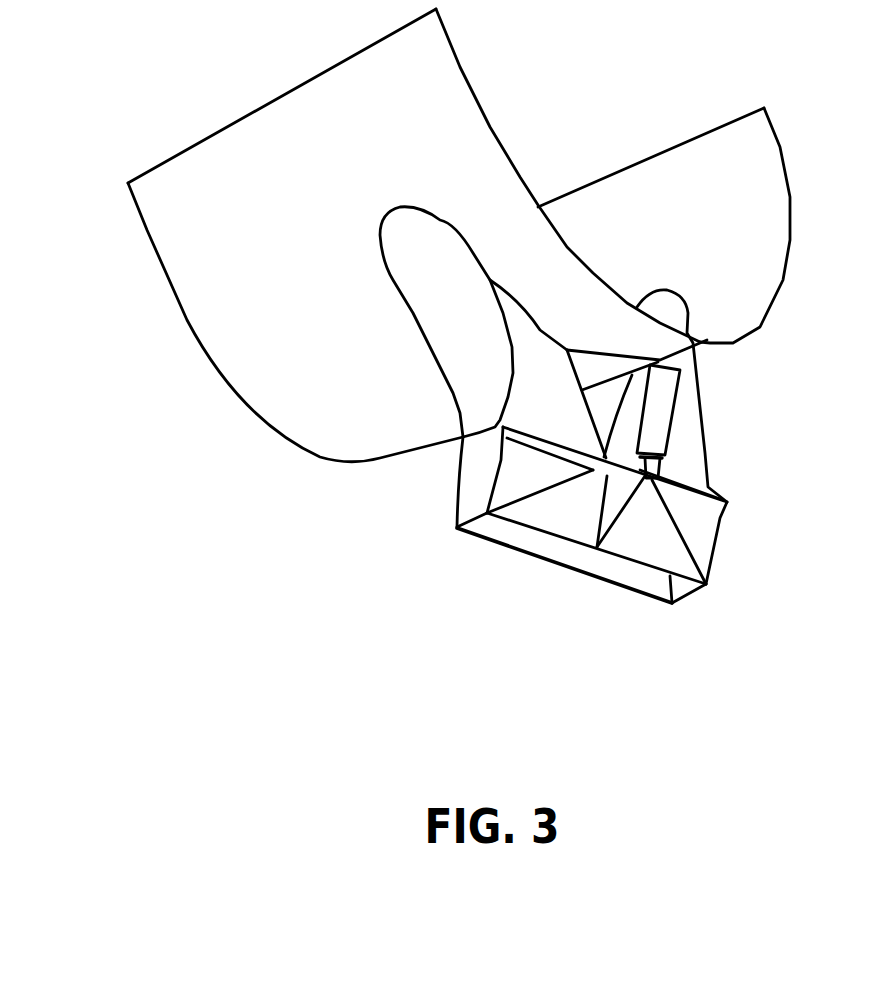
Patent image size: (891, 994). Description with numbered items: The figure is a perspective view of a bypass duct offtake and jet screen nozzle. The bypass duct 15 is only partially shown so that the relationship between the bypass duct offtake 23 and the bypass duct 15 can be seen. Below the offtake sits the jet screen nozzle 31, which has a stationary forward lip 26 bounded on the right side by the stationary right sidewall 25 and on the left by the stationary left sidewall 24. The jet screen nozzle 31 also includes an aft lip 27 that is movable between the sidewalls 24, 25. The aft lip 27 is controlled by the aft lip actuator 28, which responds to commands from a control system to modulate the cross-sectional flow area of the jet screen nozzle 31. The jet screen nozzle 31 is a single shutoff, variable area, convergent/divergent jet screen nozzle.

The bypass duct 15 is at (767, 232).
The bypass duct offtake 23 is at (443, 300).
The stationary left sidewall 24 is at (473, 492).
The stationary right sidewall 25 is at (678, 585).
The stationary forward lip 26 is at (558, 573).
The aft lip 27 is at (648, 540).
The aft lip actuator 28 is at (662, 378).
The jet screen nozzle 31 is at (532, 565).